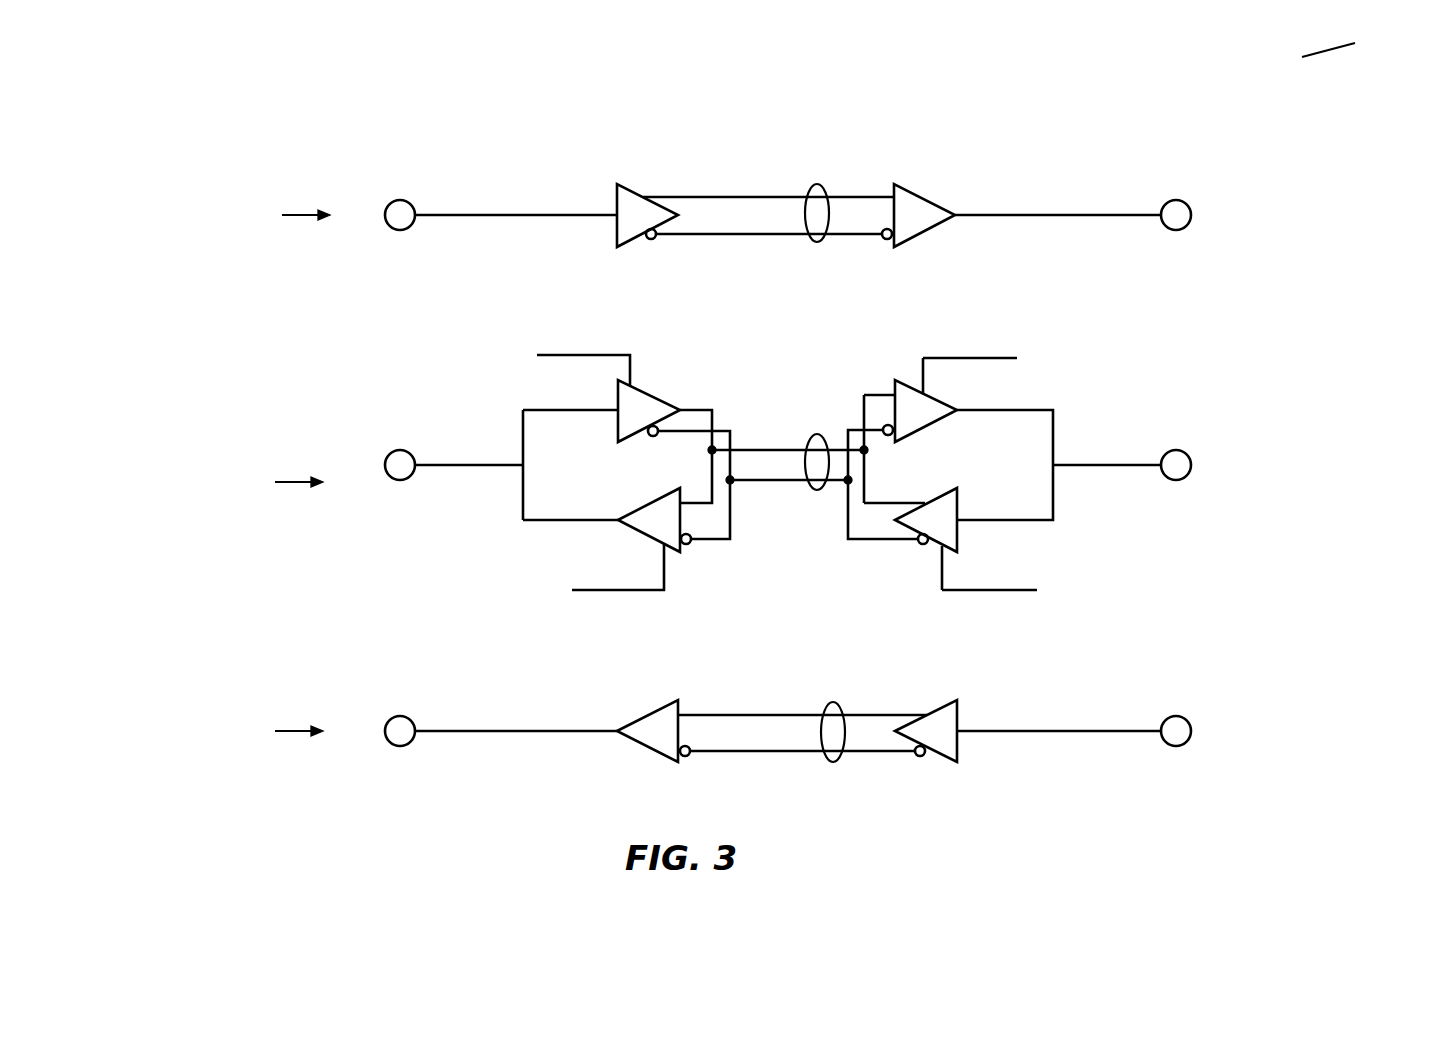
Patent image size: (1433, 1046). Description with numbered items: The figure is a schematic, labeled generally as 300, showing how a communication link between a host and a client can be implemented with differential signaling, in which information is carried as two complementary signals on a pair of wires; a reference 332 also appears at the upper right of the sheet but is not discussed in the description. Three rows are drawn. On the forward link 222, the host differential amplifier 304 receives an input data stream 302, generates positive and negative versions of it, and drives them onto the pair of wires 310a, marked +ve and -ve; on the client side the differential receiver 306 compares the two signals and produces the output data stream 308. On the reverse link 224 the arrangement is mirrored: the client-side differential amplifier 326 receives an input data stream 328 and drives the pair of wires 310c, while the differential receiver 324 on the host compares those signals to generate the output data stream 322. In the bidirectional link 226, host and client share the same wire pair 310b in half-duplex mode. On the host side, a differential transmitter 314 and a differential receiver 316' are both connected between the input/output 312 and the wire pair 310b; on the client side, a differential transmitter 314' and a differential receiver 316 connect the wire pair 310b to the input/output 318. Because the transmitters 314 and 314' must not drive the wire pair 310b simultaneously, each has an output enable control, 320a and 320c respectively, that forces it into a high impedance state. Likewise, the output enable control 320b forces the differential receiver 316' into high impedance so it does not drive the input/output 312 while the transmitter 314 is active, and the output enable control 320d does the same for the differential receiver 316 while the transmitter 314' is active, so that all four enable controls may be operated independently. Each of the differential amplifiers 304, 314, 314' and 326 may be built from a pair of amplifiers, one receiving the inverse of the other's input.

The communication link system 300 is at (164, 81).
The input data stream 302 is at (408, 204).
The host differential amplifier 304 is at (617, 188).
The differential receiver 306 is at (921, 199).
The output data stream 308 is at (1170, 203).
The pair of wires 310a is at (815, 186).
The wire pair 310b is at (815, 433).
The pair of wires 310c is at (831, 703).
The input/output 312 is at (407, 453).
The differential transmitter 314 is at (620, 454).
The differential transmitter 314' is at (976, 530).
The differential receiver 316 is at (931, 440).
The differential receiver 316' is at (590, 520).
The input/output 318 is at (1170, 453).
The output enable control 320a is at (568, 354).
The output enable control 320b is at (590, 590).
The output enable control 320c is at (1017, 591).
The output enable control 320d is at (1005, 358).
The output data stream 322 is at (408, 719).
The differential receiver 324 is at (653, 712).
The client-side differential amplifier 326 is at (960, 713).
The input data stream 328 is at (1170, 719).
The connection indicator 332 is at (1355, 43).
The forward link 222 is at (236, 214).
The reverse link 224 is at (229, 729).
The bidirectional link 226 is at (232, 480).